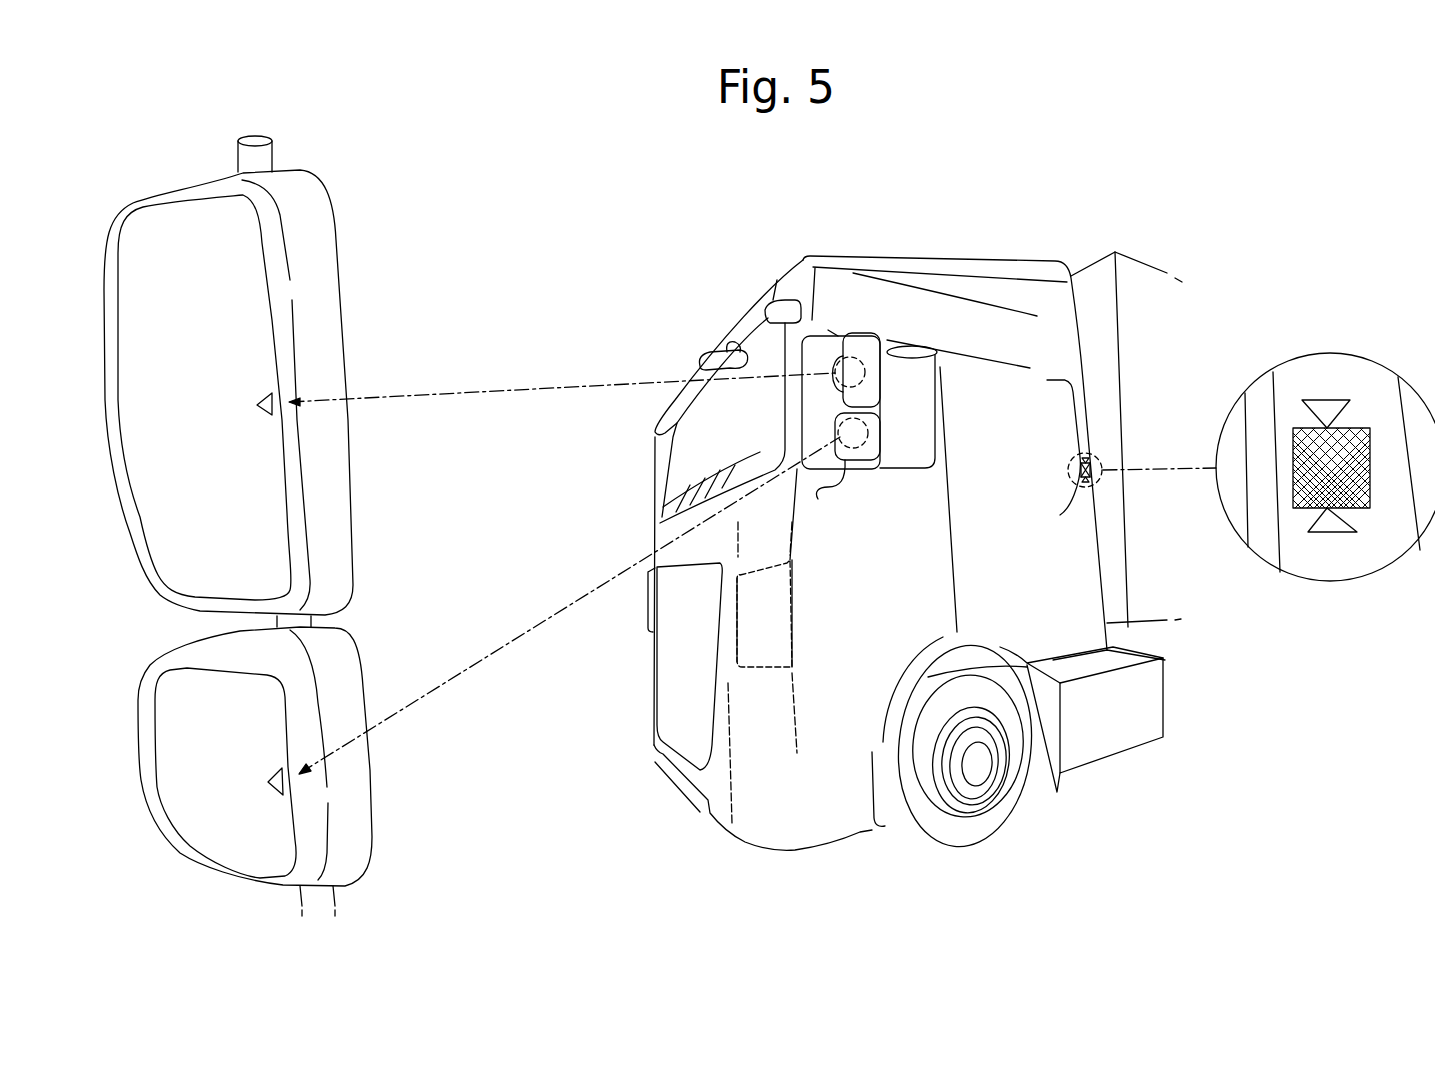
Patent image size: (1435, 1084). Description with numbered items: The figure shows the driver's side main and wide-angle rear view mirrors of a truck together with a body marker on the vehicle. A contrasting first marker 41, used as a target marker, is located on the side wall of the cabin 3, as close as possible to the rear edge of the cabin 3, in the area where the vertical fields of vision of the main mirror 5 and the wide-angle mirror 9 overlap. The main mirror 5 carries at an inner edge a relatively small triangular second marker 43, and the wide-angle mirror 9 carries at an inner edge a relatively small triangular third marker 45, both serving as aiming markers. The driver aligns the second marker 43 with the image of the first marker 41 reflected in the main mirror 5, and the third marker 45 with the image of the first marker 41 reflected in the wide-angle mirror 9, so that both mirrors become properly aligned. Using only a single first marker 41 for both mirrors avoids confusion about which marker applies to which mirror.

The cabin 3 is at (1063, 577).
The main mirror 5 is at (310, 240).
The wide-angle mirror 9 is at (350, 812).
The first marker 41 is at (1100, 457).
The second marker 43 is at (260, 410).
The third marker 45 is at (273, 785).